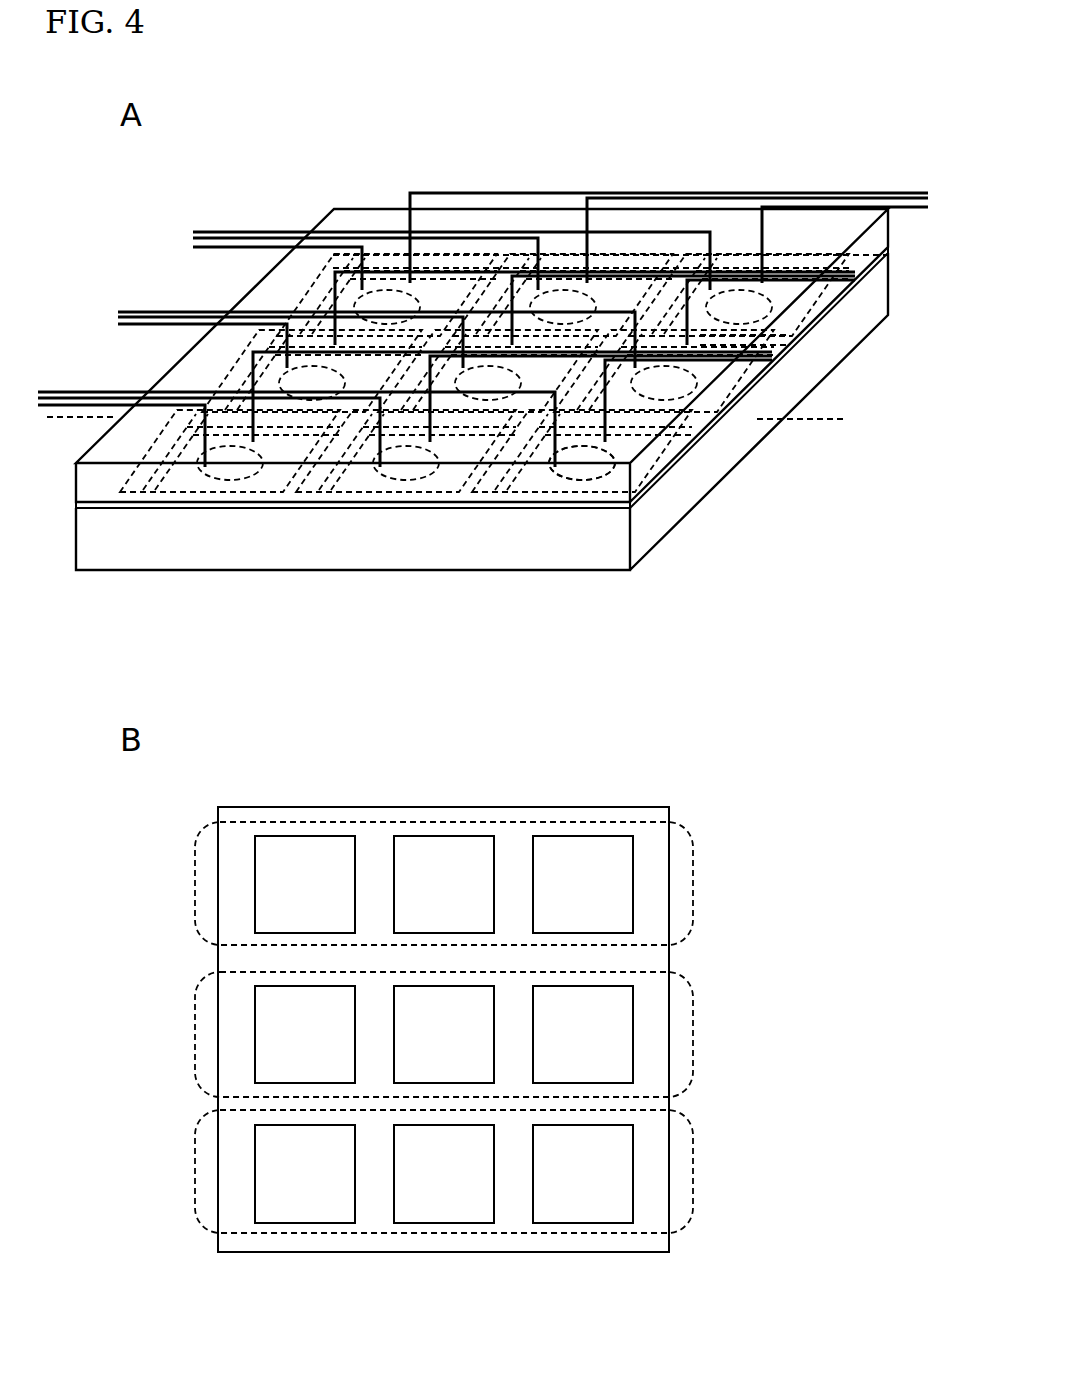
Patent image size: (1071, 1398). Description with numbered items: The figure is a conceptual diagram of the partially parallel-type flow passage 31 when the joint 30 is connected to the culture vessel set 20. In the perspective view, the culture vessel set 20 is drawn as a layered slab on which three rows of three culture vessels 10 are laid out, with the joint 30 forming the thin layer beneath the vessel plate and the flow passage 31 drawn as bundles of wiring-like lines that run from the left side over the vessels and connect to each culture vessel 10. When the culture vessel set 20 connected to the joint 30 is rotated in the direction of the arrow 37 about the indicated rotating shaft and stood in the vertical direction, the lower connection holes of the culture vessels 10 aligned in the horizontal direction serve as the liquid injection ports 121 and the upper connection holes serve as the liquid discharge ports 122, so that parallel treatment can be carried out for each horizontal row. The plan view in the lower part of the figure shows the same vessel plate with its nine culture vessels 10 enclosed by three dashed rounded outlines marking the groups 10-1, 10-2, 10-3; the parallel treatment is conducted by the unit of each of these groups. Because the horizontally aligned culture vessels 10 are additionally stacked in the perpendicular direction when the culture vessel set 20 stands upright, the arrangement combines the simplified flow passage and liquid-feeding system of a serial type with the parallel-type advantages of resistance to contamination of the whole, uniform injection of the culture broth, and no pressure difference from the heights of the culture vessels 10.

The culture vessel 10 is at (348, 487).
The culture vessel set 20 is at (423, 570).
The joint 30 is at (583, 505).
The partially parallel-type flow passage 31 is at (293, 232).
The arrow 37 is at (838, 484).
The liquid injection port 121 is at (553, 488).
The liquid discharge port 122 is at (600, 443).
The group of culture vessels 10-1 is at (693, 1176).
The group of culture vessels 10-2 is at (693, 1044).
The group of culture vessels 10-3 is at (693, 890).